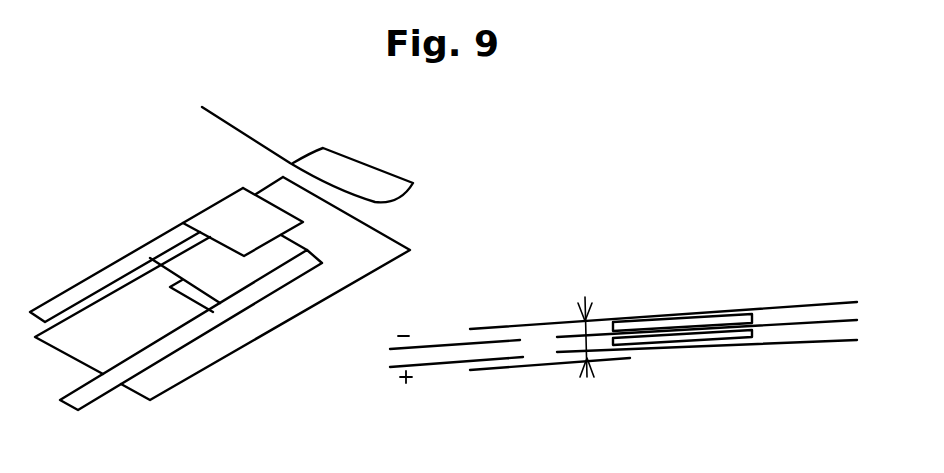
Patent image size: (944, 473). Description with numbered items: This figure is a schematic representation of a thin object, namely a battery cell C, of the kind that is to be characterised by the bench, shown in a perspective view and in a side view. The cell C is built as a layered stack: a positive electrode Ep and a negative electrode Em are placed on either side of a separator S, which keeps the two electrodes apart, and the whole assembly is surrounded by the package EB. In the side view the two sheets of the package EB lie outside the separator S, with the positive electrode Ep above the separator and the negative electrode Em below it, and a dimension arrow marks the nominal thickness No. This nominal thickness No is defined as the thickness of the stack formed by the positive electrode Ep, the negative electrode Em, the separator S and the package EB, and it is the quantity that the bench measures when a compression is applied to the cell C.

The package EB is at (383, 250).
The separator S is at (193, 254).
The positive electrode Ep is at (228, 218).
The negative electrode Em is at (265, 283).
The battery cell C is at (253, 363).
The nominal thickness No is at (583, 333).